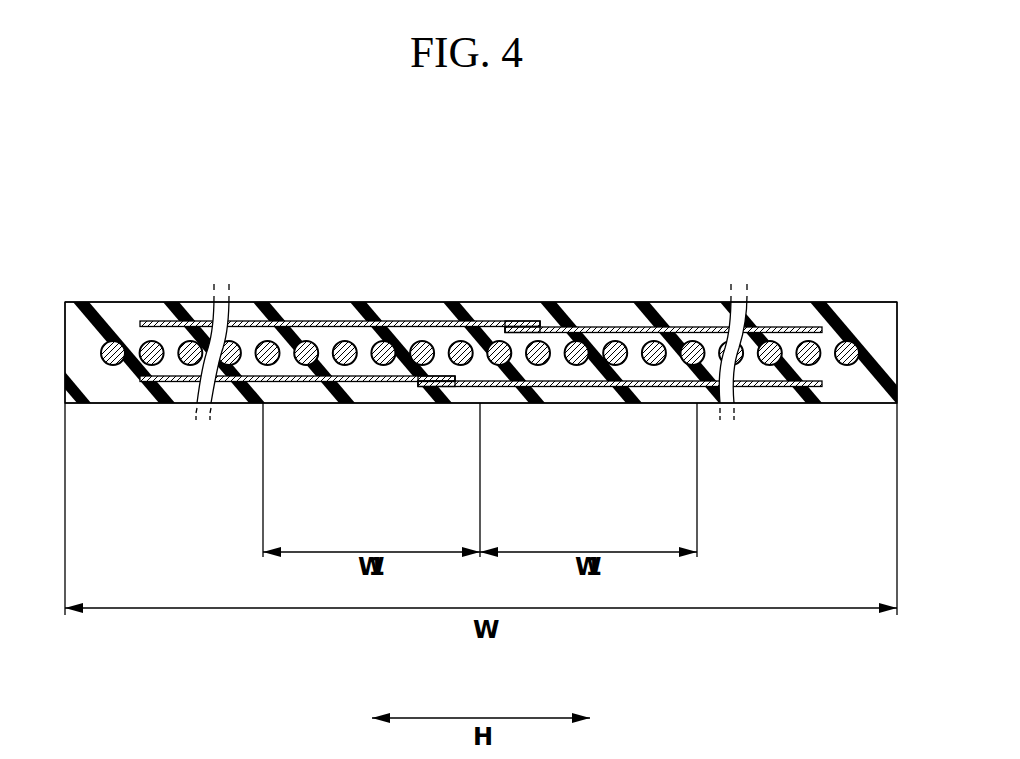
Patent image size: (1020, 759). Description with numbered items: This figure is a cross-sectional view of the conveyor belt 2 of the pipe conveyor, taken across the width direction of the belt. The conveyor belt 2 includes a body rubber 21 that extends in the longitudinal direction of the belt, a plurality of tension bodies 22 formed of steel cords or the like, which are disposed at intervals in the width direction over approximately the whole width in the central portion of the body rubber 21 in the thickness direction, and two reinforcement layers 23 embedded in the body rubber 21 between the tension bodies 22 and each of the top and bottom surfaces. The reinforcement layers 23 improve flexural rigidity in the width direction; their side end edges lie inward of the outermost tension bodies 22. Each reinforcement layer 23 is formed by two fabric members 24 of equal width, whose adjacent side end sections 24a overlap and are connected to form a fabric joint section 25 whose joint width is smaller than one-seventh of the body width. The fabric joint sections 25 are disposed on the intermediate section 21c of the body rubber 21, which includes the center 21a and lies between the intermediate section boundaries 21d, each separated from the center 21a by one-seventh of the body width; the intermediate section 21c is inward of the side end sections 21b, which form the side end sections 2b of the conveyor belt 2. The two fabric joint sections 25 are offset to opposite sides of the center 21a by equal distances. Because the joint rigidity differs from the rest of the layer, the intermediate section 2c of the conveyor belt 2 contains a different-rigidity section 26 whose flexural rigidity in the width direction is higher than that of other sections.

The conveyor belt 2 is at (798, 170).
The side end sections of the conveyor belt 2b is at (177, 302).
The intermediate section of the conveyor belt 2c is at (606, 302).
The body rubber 21 is at (95, 302).
The center of the body rubber 21a is at (482, 405).
The side end sections of the body rubber 21b is at (123, 302).
The intermediate section of the body rubber 21c is at (418, 302).
The intermediate section boundaries 21d is at (262, 405).
The tension bodies 22 is at (345, 351).
The reinforcement layers 23 is at (247, 319).
The fabric members 24 is at (297, 321).
The side end sections of the fabric members 24a is at (514, 321).
The fabric joint section 25 is at (608, 217).
The different-rigidity section 26 is at (517, 321).